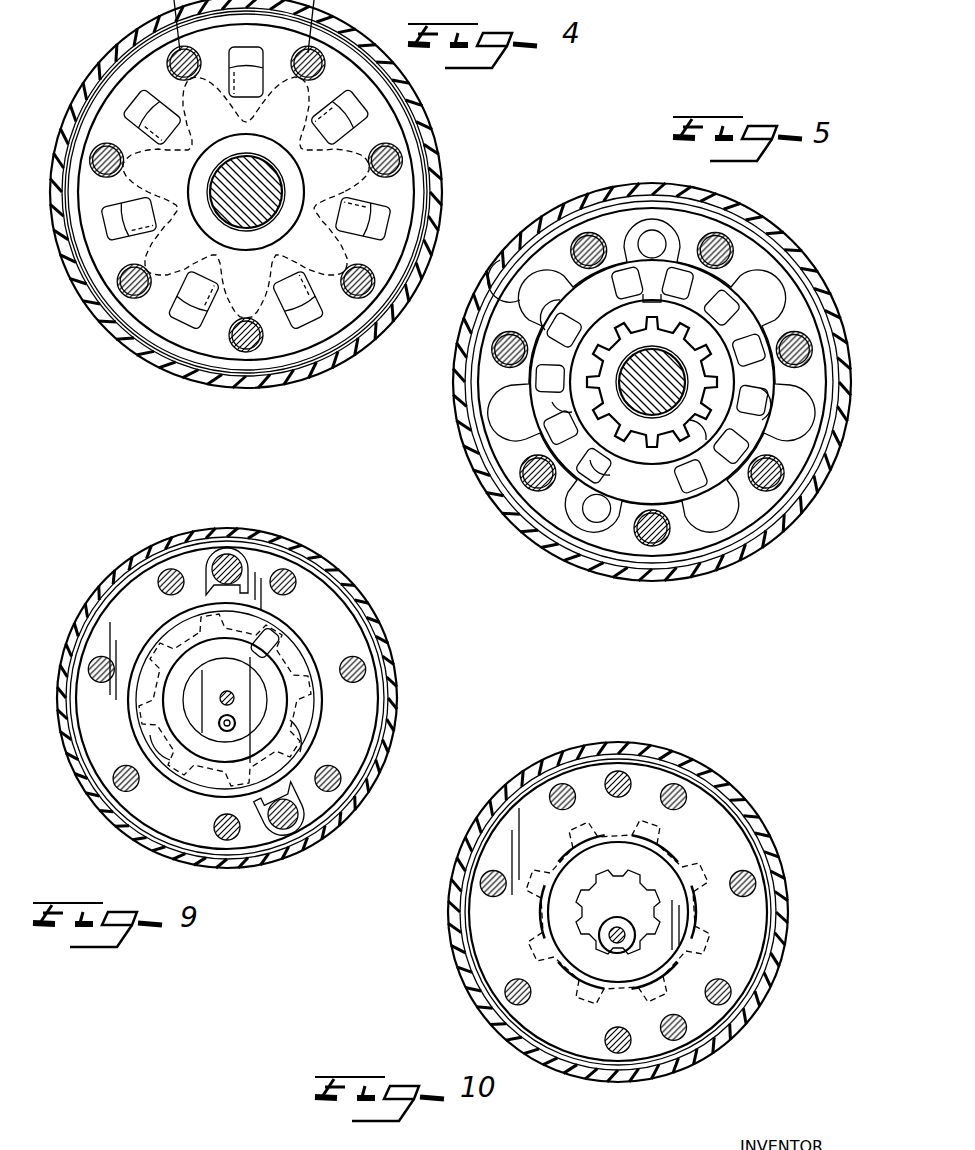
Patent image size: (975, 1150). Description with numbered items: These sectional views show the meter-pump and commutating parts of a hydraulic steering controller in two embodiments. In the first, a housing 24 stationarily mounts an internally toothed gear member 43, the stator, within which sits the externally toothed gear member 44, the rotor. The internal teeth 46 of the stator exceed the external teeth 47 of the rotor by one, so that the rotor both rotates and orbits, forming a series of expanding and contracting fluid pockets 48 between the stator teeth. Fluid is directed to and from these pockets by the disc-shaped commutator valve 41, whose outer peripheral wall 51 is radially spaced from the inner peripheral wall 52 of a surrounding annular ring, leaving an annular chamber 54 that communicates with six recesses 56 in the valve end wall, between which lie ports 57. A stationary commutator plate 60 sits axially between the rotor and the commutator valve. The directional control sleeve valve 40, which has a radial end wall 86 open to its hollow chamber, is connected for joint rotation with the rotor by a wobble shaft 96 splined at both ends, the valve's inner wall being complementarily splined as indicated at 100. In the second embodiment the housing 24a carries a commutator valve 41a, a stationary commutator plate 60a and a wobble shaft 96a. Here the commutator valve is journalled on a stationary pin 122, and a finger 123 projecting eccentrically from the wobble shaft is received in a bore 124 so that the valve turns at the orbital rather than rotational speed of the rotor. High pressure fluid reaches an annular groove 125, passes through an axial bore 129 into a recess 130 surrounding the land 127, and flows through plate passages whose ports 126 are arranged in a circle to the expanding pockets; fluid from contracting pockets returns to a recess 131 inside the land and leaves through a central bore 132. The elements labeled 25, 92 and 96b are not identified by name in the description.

In FIG. 5, the housing 24 is at (563, 194).
In FIG. 9, the housing 24a is at (93, 593).
In FIG. 10, the housing 24a is at (732, 772).
In FIG. 4, the pin 25 is at (100, 157).
In FIG. 5, the pin 25 is at (586, 243).
In FIG. 5, the directional control sleeve valve 40 is at (689, 316).
In FIG. 5, the commutator valve 41 is at (712, 497).
In FIG. 9, the commutator valve 41a is at (331, 737).
In FIG. 10, the commutator valve 41a is at (717, 818).
In FIG. 4, the gear member 43 is at (212, 327).
In FIG. 4, the gear member 44 is at (120, 209).
In FIG. 4, the internal teeth 46 is at (340, 102).
In FIG. 4, the external teeth 47 is at (246, 192).
In FIG. 4, the fluid pockets 48 is at (152, 104).
In FIG. 5, the outer peripheral wall 51 is at (690, 233).
In FIG. 5, the inner peripheral wall 52 is at (640, 235).
In FIG. 5, the annular chamber 54 is at (795, 392).
In FIG. 5, the recesses 56 is at (552, 305).
In FIG. 5, the ports 57 is at (582, 462).
In FIG. 4, the commutator plate 60 is at (384, 124).
In FIG. 10, the commutator plate 60a is at (738, 966).
In FIG. 5, the radial end wall 86 is at (740, 305).
In FIG. 4, the pin 92 is at (273, 26).
In FIG. 4, the wobble shaft 96 is at (206, 212).
In FIG. 5, the wobble shaft 96 is at (603, 412).
In FIG. 10, the wobble shaft 96a is at (594, 929).
In FIG. 10, the cam ring 96b is at (643, 892).
In FIG. 5, the splined inner wall 100 is at (715, 409).
In FIG. 9, the stationary pin 122 is at (163, 648).
In FIG. 10, the finger 123 is at (627, 935).
In FIG. 9, the bore 124 is at (236, 722).
In FIG. 9, the annular groove 125 is at (229, 556).
In FIG. 10, the annular groove 125 is at (671, 784).
In FIG. 9, the ports 126 is at (385, 790).
In FIG. 10, the ports 126 is at (616, 982).
In FIG. 9, the land 127 is at (288, 648).
In FIG. 9, the axial bore 129 is at (207, 582).
In FIG. 9, the recess 130 is at (148, 719).
In FIG. 9, the recess 131 is at (292, 654).
In FIG. 10, the central bore 132 is at (603, 832).